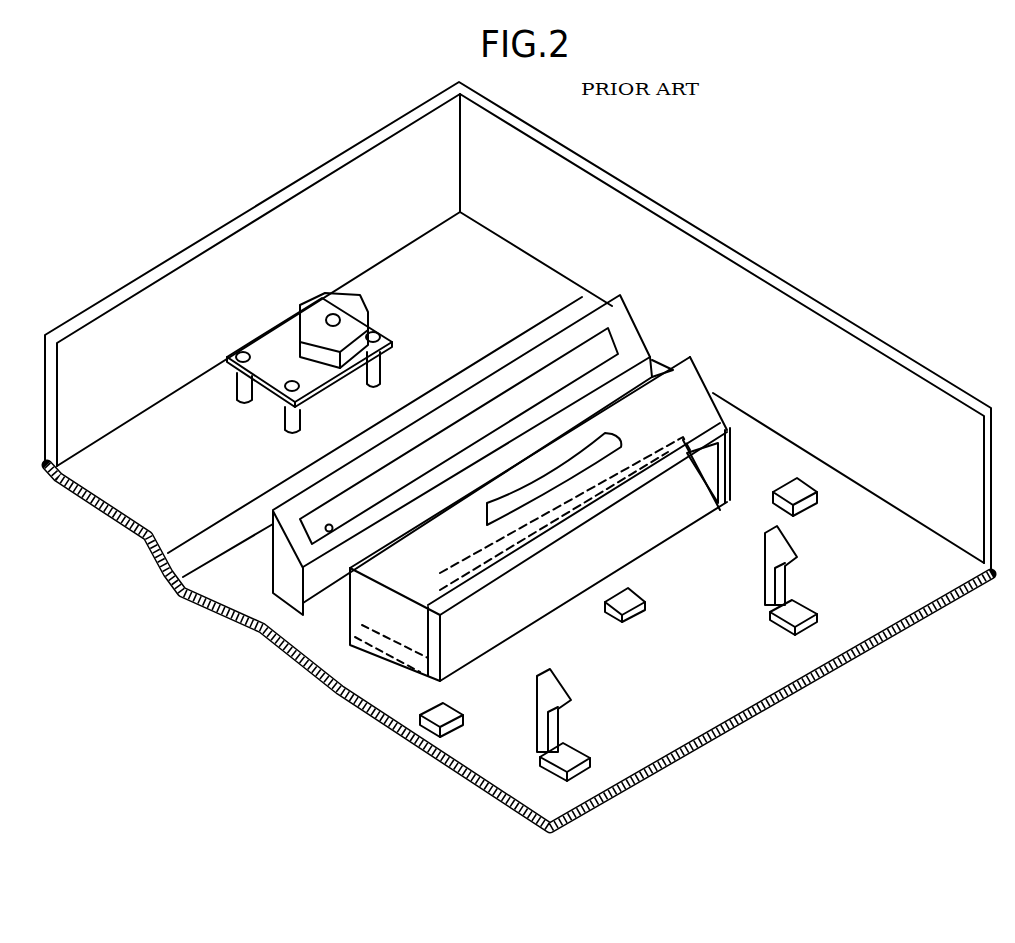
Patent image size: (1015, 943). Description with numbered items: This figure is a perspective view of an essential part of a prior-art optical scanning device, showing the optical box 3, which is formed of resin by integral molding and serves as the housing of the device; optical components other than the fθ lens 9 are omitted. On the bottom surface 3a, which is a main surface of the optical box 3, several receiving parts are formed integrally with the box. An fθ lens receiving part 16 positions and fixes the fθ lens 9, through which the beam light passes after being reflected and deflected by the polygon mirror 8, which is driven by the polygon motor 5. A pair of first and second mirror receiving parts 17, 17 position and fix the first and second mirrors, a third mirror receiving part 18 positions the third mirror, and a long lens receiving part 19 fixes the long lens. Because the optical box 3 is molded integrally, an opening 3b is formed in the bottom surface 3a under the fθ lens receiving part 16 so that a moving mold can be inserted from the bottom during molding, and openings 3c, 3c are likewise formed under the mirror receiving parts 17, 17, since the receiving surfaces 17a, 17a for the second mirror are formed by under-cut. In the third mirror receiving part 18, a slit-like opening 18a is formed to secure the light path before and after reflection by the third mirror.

The optical box 3 is at (627, 174).
The bottom surface 3a is at (352, 712).
The opening 3b is at (727, 463).
The openings 3c is at (574, 772).
The polygon motor 5 is at (267, 322).
The polygon mirror 8 is at (332, 300).
The fθ lens 9 is at (612, 437).
The fθ lens receiving part 16 is at (713, 393).
The first and second mirror receiving parts 17 is at (540, 727).
The receiving surfaces 17a is at (560, 718).
The third mirror receiving part 18 is at (272, 577).
The slit-like opening 18a is at (327, 531).
The long lens receiving part 19 is at (418, 733).